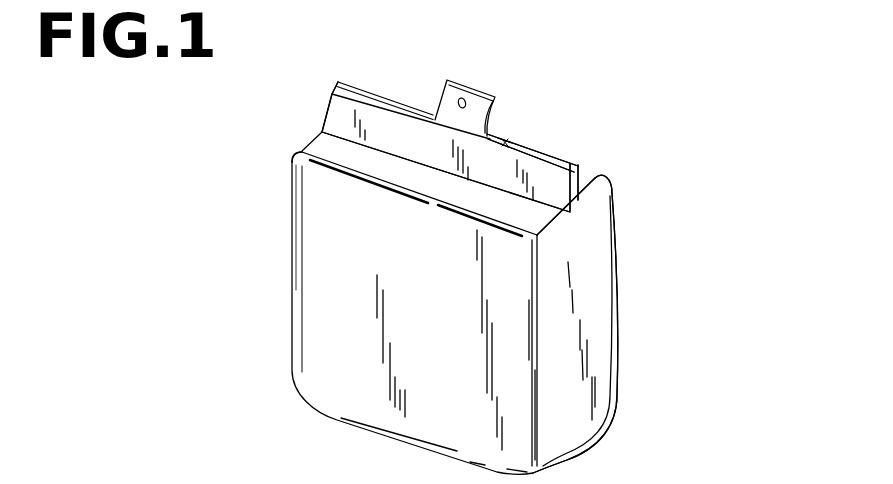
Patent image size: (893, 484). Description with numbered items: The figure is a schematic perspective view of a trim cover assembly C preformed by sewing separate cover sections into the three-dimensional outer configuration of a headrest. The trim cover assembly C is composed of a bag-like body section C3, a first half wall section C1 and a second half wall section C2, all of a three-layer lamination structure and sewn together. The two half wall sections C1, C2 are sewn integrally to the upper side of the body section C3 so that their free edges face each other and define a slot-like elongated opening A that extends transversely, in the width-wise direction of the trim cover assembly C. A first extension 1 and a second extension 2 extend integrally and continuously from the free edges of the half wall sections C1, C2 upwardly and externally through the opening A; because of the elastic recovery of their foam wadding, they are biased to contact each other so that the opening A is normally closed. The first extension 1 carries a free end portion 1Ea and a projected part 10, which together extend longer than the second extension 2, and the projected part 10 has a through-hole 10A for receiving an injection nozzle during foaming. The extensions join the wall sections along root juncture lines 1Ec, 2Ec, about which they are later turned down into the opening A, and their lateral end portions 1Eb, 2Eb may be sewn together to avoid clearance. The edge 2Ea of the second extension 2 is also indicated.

The first extension 1 is at (404, 105).
The second extension 2 is at (380, 124).
The projected part 10 is at (482, 92).
The through-hole 10A is at (460, 98).
The elongated opening A is at (506, 141).
The trim cover assembly C is at (721, 144).
The first half wall section C1 is at (593, 175).
The second half wall section C2 is at (312, 143).
The bag-like body section C3 is at (583, 298).
The free end portion 1Ea is at (548, 153).
The lateral end portion 1Eb is at (337, 87).
The root juncture line 1Ec is at (586, 203).
The long-side edge of case opening 2Ea is at (561, 170).
The lateral end portion 2Eb is at (330, 115).
The root juncture line 2Ec is at (420, 167).